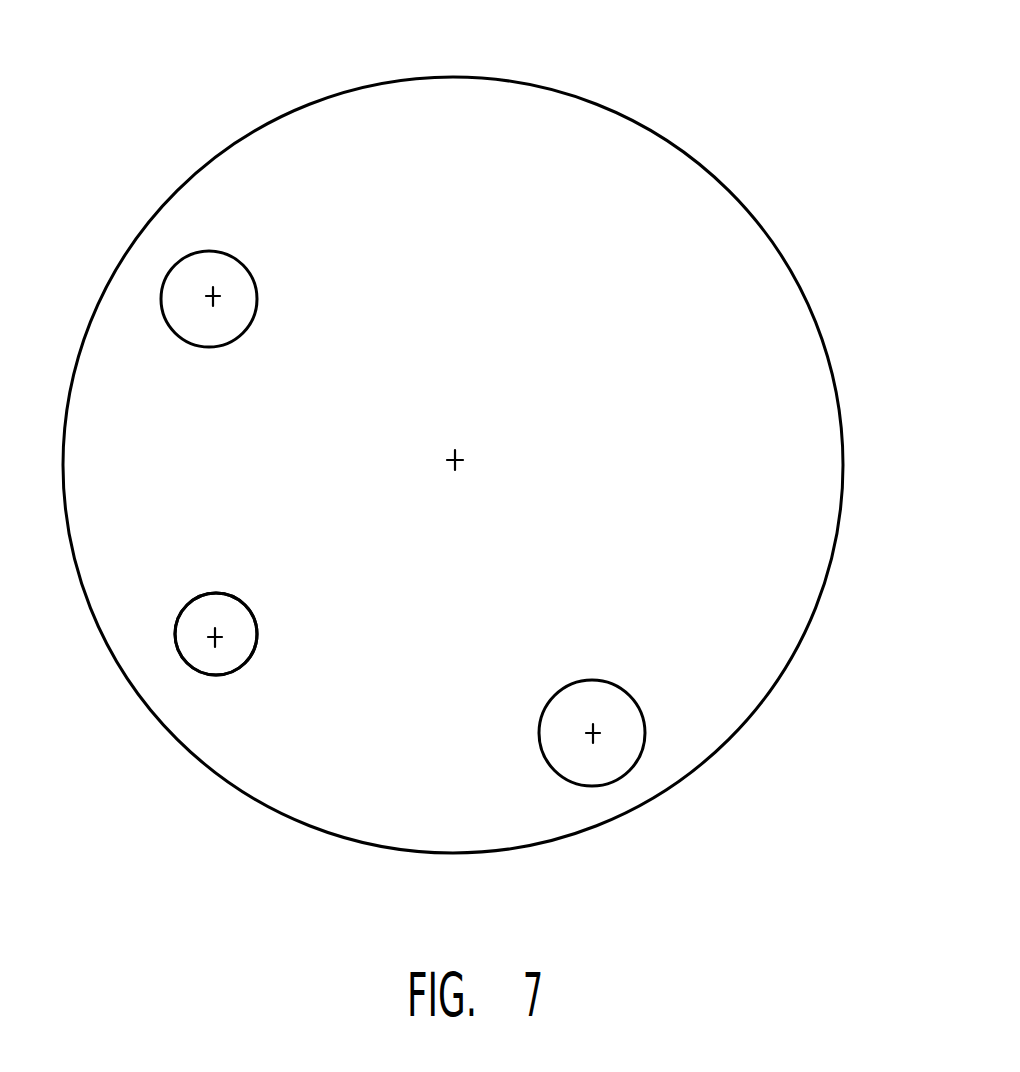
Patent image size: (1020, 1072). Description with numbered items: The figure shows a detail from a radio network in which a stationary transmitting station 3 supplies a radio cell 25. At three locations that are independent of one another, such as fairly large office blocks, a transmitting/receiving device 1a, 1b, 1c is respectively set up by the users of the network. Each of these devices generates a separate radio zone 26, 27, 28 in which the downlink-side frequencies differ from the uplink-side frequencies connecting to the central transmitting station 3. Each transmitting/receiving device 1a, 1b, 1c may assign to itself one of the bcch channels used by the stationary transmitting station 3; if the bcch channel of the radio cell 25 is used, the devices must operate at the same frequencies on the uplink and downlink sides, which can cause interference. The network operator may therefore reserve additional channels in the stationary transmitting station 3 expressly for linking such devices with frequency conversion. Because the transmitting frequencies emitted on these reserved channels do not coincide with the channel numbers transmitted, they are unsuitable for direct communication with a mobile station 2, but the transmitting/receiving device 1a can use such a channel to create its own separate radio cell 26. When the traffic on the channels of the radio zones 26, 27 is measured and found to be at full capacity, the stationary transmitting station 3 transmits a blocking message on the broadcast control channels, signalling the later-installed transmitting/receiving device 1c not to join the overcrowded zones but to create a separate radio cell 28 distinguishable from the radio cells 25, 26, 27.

The radio cell 25 is at (805, 297).
The separate radio zone 26 is at (168, 273).
The separate radio zone 27 is at (177, 645).
The separate radio zone 28 is at (638, 763).
The transmitting/receiving device 1a is at (216, 294).
The transmitting/receiving device 1b is at (221, 642).
The transmitting/receiving device 1c is at (588, 731).
The mobile station 2 is at (230, 609).
The stationary transmitting station 3 is at (458, 456).